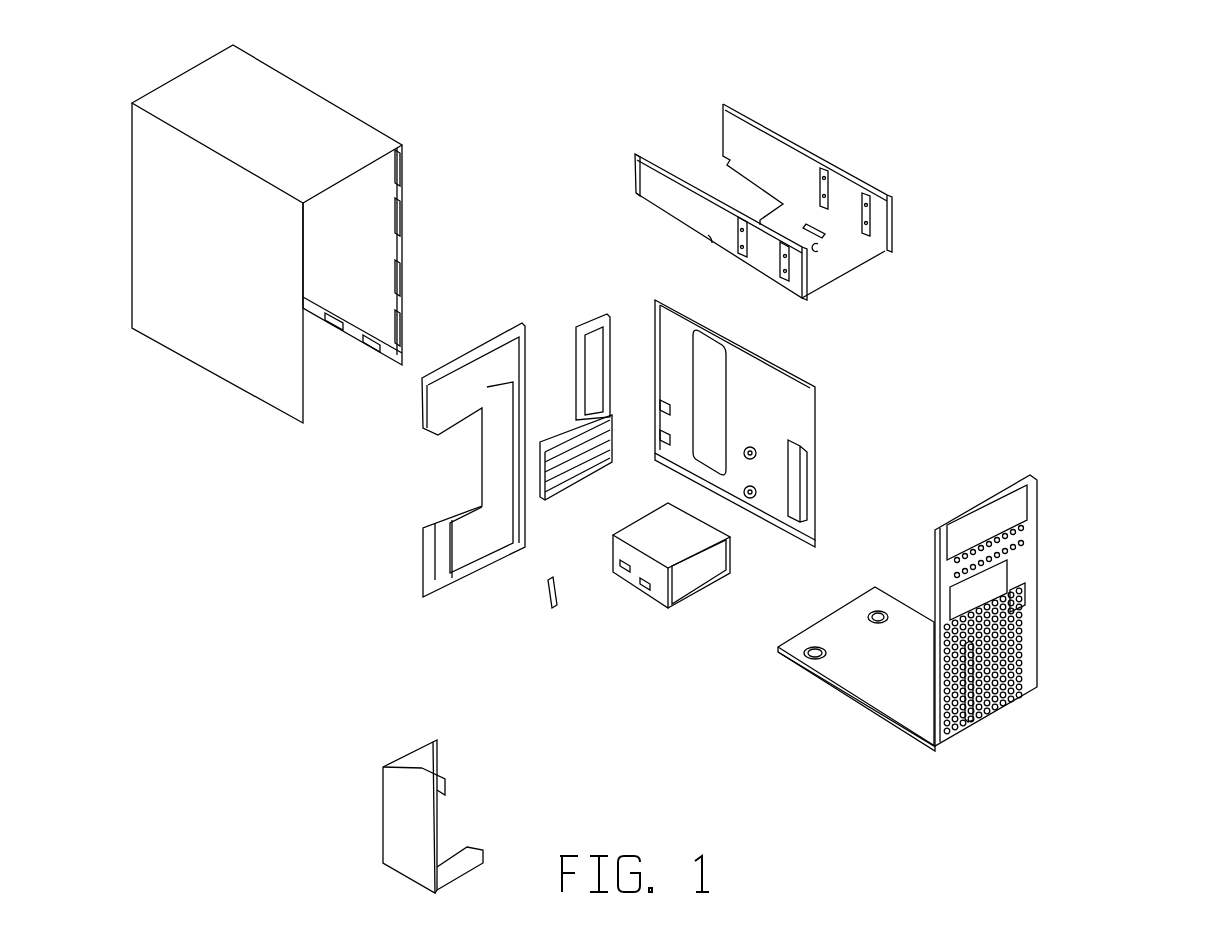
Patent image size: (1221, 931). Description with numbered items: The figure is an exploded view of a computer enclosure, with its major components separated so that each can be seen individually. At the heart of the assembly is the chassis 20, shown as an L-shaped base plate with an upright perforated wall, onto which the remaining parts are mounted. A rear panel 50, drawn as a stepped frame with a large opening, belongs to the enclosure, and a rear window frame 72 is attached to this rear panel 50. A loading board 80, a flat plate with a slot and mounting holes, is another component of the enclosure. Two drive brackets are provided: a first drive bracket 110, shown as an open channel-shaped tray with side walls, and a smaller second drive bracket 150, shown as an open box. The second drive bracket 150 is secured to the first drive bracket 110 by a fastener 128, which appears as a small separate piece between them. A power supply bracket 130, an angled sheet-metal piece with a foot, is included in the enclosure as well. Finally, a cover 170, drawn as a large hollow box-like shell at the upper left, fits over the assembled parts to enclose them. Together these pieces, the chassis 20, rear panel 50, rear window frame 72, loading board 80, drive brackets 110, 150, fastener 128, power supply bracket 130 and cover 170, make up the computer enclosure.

The chassis 20 is at (1064, 546).
The rear panel 50 is at (462, 328).
The rear window frame 72 is at (580, 313).
The loading board 80 is at (825, 368).
The first drive bracket 110 is at (826, 140).
The fastener 128 is at (544, 610).
The power supply bracket 130 is at (368, 808).
The second drive bracket 150 is at (642, 602).
The cover 170 is at (338, 75).